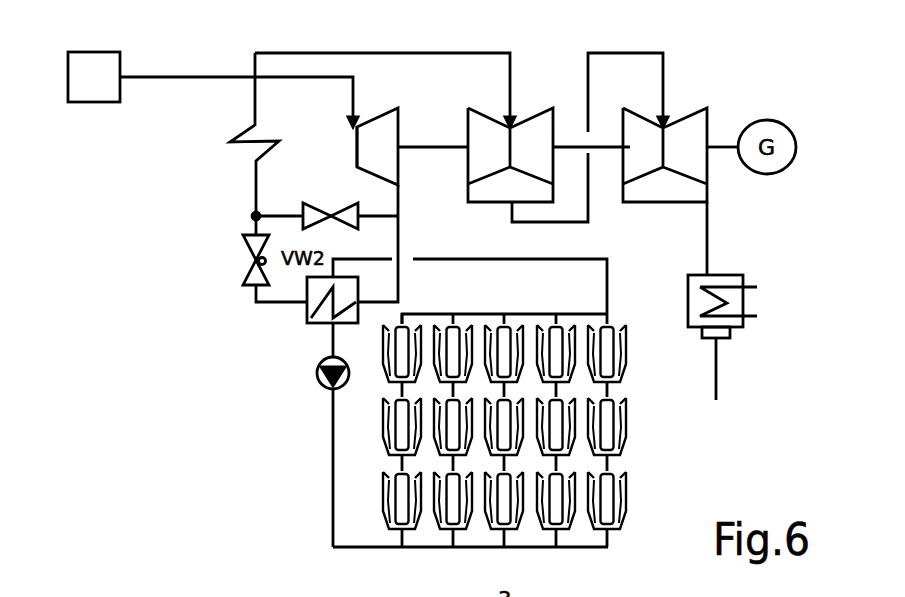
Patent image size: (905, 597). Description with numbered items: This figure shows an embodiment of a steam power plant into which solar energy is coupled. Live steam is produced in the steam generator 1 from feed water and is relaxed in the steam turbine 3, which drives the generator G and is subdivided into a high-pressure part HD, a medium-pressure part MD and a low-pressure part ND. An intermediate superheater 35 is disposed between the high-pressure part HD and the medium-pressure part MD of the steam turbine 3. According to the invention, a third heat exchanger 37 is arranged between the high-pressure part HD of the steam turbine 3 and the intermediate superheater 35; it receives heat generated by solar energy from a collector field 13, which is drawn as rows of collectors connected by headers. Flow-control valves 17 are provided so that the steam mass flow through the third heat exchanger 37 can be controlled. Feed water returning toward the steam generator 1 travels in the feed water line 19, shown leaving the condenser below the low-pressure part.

The steam generator 1 is at (122, 54).
The steam turbine 3 is at (536, 54).
The collector field 13 is at (578, 560).
The flow-control valves 17 is at (305, 213).
The feed water line 19 is at (716, 378).
The intermediate superheater 35 is at (242, 157).
The third heat exchanger 37 is at (306, 325).